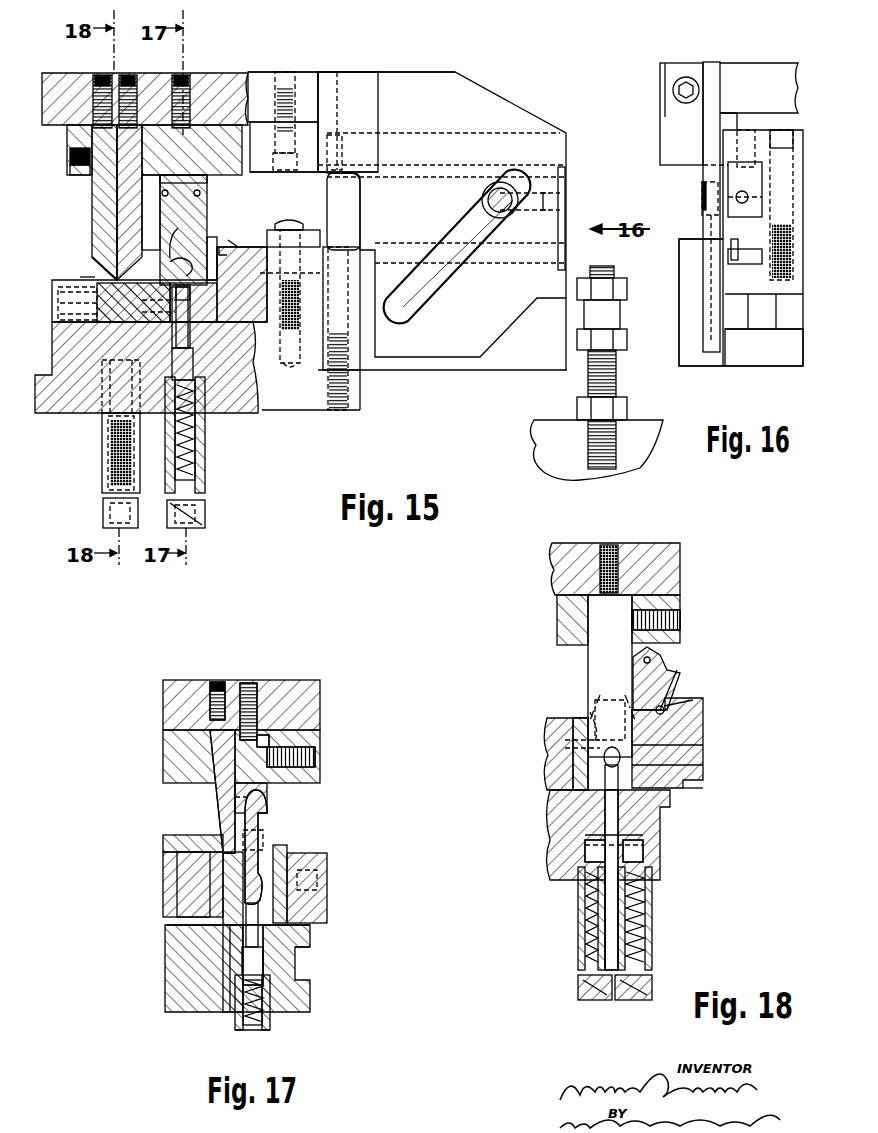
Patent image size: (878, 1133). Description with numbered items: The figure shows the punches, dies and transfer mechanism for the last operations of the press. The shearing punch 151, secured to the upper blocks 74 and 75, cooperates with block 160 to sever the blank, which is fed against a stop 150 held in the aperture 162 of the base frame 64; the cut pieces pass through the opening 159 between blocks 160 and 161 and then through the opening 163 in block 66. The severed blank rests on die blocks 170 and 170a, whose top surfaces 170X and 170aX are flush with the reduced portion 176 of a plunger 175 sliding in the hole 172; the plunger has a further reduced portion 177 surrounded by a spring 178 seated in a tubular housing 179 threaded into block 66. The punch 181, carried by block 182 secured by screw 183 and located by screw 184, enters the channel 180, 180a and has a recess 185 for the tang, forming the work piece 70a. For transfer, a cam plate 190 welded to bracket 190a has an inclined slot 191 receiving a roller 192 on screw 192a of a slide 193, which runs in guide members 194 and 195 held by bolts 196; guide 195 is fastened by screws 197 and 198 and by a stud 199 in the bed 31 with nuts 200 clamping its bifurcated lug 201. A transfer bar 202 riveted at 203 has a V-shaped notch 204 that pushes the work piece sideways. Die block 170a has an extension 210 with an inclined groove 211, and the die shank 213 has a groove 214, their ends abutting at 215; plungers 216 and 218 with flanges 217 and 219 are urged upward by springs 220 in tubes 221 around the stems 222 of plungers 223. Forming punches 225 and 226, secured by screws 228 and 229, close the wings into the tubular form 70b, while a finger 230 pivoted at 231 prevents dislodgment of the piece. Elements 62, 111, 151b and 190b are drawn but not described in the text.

In FIG. 15, the bed 31 is at (645, 423).
In FIG. 17, the plate 62 is at (163, 842).
In FIG. 15, the base frame 64 is at (52, 281).
In FIG. 17, the base frame 64 is at (327, 915).
In FIG. 18, the base frame 64 is at (695, 785).
In FIG. 15, the block 66 is at (361, 392).
In FIG. 17, the block 66 is at (310, 940).
In FIG. 18, the block 66 is at (550, 818).
In FIG. 15, the work piece 70a is at (112, 322).
In FIG. 17, the work piece 70a is at (302, 856).
In FIG. 18, the formed work piece 70b is at (602, 758).
In FIG. 15, the block 74 is at (67, 136).
In FIG. 17, the block 74 is at (163, 758).
In FIG. 18, the block 74 is at (680, 600).
In FIG. 15, the block 75 is at (45, 75).
In FIG. 16, the block 75 is at (768, 63).
In FIG. 17, the block 75 is at (163, 710).
In FIG. 18, the block 75 is at (680, 565).
In FIG. 15, the pin 111 is at (190, 295).
In FIG. 17, the stop 150 is at (282, 847).
In FIG. 18, the stop 150 is at (703, 726).
In FIG. 17, the punch 151 is at (216, 790).
In FIG. 17, the set screw 151b is at (217, 682).
In FIG. 17, the opening 159 is at (223, 913).
In FIG. 17, the block 160 is at (177, 886).
In FIG. 18, the block 160 is at (582, 720).
In FIG. 17, the block 161 is at (243, 935).
In FIG. 17, the aperture 162 is at (327, 888).
In FIG. 17, the opening 163 is at (230, 965).
In FIG. 15, the die block 170 is at (240, 312).
In FIG. 17, the die block 170 is at (266, 850).
In FIG. 18, the die block 170 is at (600, 708).
In FIG. 15, the die block 170a is at (174, 230).
In FIG. 18, the die block 170a is at (593, 726).
In FIG. 15, the top surface 170aX is at (183, 235).
In FIG. 15, the top surface 170X is at (262, 221).
In FIG. 15, the hole 172 is at (158, 310).
In FIG. 15, the plunger 175 is at (194, 370).
In FIG. 17, the plunger 175 is at (263, 966).
In FIG. 15, the reduced portion 176 is at (173, 334).
In FIG. 17, the reduced portion 176 is at (258, 940).
In FIG. 15, the reduced portion 177 is at (193, 423).
In FIG. 17, the reduced portion 177 is at (243, 1020).
In FIG. 15, the spring 178 is at (195, 445).
In FIG. 17, the spring 178 is at (270, 1025).
In FIG. 15, the tubular housing 179 is at (204, 466).
In FIG. 17, the tubular housing 179 is at (235, 1030).
In FIG. 15, the channel 180 is at (213, 245).
In FIG. 18, the channel 180 is at (565, 737).
In FIG. 15, the channel 180a is at (104, 370).
In FIG. 15, the punch 181 is at (197, 194).
In FIG. 17, the punch 181 is at (258, 830).
In FIG. 15, the block 182 is at (197, 180).
In FIG. 17, the block 182 is at (268, 742).
In FIG. 17, the screw 183 is at (315, 757).
In FIG. 15, the screw 184 is at (183, 78).
In FIG. 17, the screw 184 is at (249, 683).
In FIG. 15, the recess 185 is at (185, 270).
In FIG. 15, the cam plate 190 is at (494, 110).
In FIG. 16, the cam plate 190 is at (712, 62).
In FIG. 15, the bracket 190a is at (340, 80).
In FIG. 16, the bracket 190a is at (660, 78).
In FIG. 16, the pin 190b is at (748, 198).
In FIG. 15, the inclined slot 191 is at (455, 226).
In FIG. 15, the roller 192 is at (482, 197).
In FIG. 15, the screw 192a is at (500, 212).
In FIG. 15, the slide 193 is at (353, 178).
In FIG. 16, the slide 193 is at (752, 176).
In FIG. 16, the guide member 194 is at (758, 134).
In FIG. 16, the guide 195 is at (716, 288).
In FIG. 16, the bolt 196 is at (786, 136).
In FIG. 15, the screw 197 is at (305, 222).
In FIG. 15, the screw 198 is at (338, 247).
In FIG. 15, the stud 199 is at (617, 380).
In FIG. 15, the nut 200 is at (627, 290).
In FIG. 15, the bifurcated lug 201 is at (620, 316).
In FIG. 16, the bifurcated lug 201 is at (758, 332).
In FIG. 15, the transfer bar 202 is at (290, 224).
In FIG. 16, the transfer bar 202 is at (735, 264).
In FIG. 16, the rivet 203 is at (736, 239).
In FIG. 15, the V-shaped notch 204 is at (225, 247).
In FIG. 15, the extension 210 is at (97, 306).
In FIG. 18, the extension 210 is at (703, 750).
In FIG. 15, the inclined semi-cylindrical groove 211 is at (92, 262).
In FIG. 15, the shank 213 is at (97, 295).
In FIG. 15, the inclined semi-cylindrical groove 214 is at (93, 274).
In FIG. 15, the abutment 215 is at (97, 317).
In FIG. 18, the plunger 216 is at (703, 770).
In FIG. 18, the flange 217 is at (643, 842).
In FIG. 18, the plunger 218 is at (605, 775).
In FIG. 18, the flange 219 is at (585, 835).
In FIG. 18, the spring 220 is at (585, 915).
In FIG. 15, the tube 221 is at (102, 481).
In FIG. 18, the tube 221 is at (578, 945).
In FIG. 18, the stem 222 is at (585, 895).
In FIG. 18, the plunger 223 is at (585, 855).
In FIG. 15, the forming punch 225 is at (123, 205).
In FIG. 15, the forming punch 226 is at (97, 190).
In FIG. 15, the screw 228 is at (70, 157).
In FIG. 18, the screw 229 is at (680, 620).
In FIG. 15, the finger 230 is at (103, 78).
In FIG. 18, the finger 230 is at (663, 670).
In FIG. 18, the pivot 231 is at (675, 668).